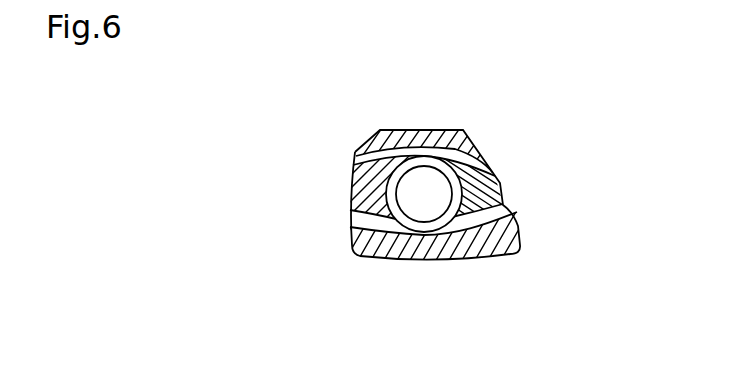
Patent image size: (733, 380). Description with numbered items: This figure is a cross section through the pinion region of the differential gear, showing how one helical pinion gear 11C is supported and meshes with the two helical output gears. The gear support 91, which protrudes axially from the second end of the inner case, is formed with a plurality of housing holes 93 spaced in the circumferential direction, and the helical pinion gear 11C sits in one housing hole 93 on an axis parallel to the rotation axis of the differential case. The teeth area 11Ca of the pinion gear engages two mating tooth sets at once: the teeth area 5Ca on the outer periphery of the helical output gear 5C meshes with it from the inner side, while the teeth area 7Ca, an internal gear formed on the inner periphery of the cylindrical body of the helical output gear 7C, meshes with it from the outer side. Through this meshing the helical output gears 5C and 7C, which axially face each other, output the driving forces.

The helical output gear 5C is at (355, 168).
The teeth area 5Ca is at (395, 148).
The helical output gear 7C is at (521, 250).
The teeth area 7Ca is at (482, 257).
The helical pinion gear 11C is at (428, 153).
The teeth area 11Ca is at (432, 158).
The gear support 91 is at (354, 180).
The housing hole 93 is at (460, 195).